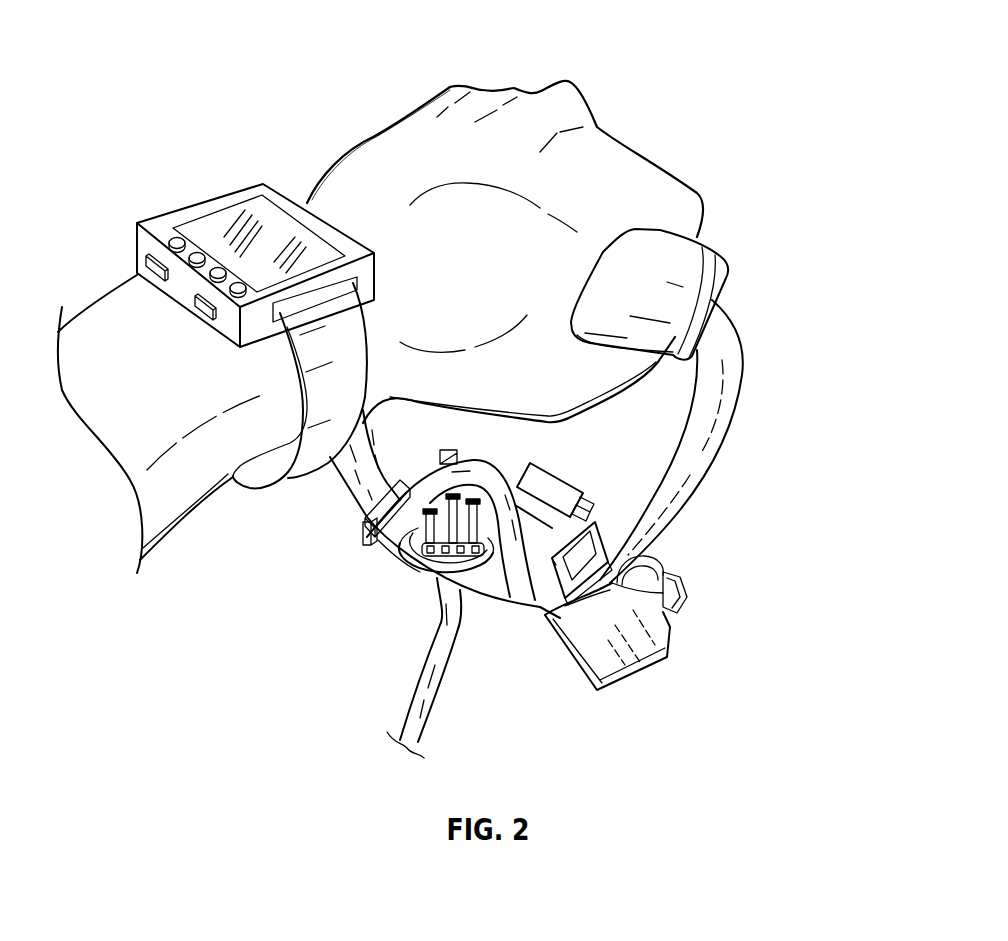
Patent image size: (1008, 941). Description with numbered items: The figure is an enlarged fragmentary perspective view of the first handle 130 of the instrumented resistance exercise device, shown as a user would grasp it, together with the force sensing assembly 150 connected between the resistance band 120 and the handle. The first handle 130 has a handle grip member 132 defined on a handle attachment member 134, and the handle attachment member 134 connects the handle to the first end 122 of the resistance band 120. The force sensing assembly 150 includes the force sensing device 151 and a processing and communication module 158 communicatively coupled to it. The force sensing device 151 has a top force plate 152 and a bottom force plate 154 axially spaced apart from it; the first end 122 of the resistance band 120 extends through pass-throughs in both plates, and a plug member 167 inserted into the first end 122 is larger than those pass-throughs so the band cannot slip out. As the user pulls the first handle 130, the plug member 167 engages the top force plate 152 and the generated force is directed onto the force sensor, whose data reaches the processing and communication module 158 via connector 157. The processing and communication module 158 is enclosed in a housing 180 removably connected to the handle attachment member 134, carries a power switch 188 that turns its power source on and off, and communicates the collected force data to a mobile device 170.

The first handle 130 is at (728, 95).
The mobile device 170 is at (266, 182).
The handle grip member 132 is at (697, 247).
The handle attachment member 134 is at (700, 430).
The force sensing assembly 150 is at (508, 680).
The force sensing device 151 is at (412, 592).
The top force plate 152 is at (413, 550).
The bottom force plate 154 is at (413, 555).
The plug member 167 is at (440, 487).
The first end 122 is at (455, 460).
The connector 157 is at (553, 480).
The processing and communication module 158 is at (683, 650).
The housing 180 is at (613, 665).
The power switch 188 is at (680, 592).
The resistance band 120 is at (417, 722).